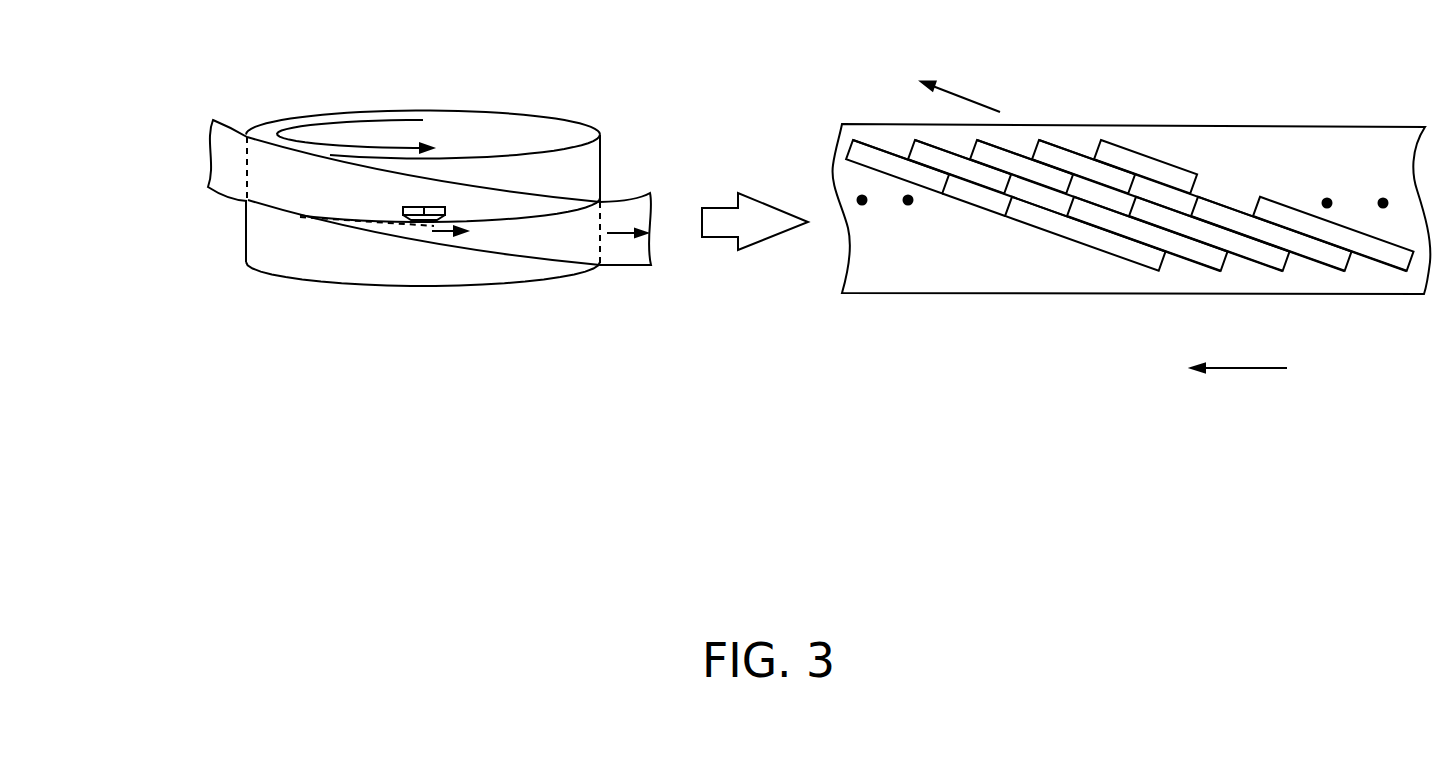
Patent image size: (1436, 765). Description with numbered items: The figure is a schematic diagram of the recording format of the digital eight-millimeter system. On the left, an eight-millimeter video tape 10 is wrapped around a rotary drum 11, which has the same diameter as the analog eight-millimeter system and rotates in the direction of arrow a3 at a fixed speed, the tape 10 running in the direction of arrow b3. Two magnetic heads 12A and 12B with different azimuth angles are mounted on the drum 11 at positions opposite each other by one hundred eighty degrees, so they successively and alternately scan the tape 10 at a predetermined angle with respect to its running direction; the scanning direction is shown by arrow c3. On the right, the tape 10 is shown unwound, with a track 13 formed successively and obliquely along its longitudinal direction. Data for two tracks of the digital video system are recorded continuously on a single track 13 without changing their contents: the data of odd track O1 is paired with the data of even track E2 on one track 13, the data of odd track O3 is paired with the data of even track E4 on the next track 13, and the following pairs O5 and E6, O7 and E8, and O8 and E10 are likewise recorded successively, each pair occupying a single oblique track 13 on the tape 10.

The 8 mm video tape 10 is at (222, 153).
The rotary drum 11 is at (507, 123).
The magnetic head 12A is at (410, 219).
The magnetic head 12B is at (372, 276).
The track 13 is at (1115, 164).
The arrow (drum rotation direction) a3 is at (340, 120).
The arrow (tape running direction) b3 is at (622, 228).
The head scanning direction c3 is at (437, 232).
The even track E2 is at (898, 168).
The even track E4 is at (960, 168).
The even track E6 is at (1021, 168).
The even track E8 is at (1084, 168).
The even track E10 is at (1147, 168).
The odd track O1 is at (1085, 234).
The odd track O3 is at (1147, 234).
The odd track O5 is at (1209, 234).
The odd track O7 is at (1271, 234).
The odd track O8 is at (1333, 234).